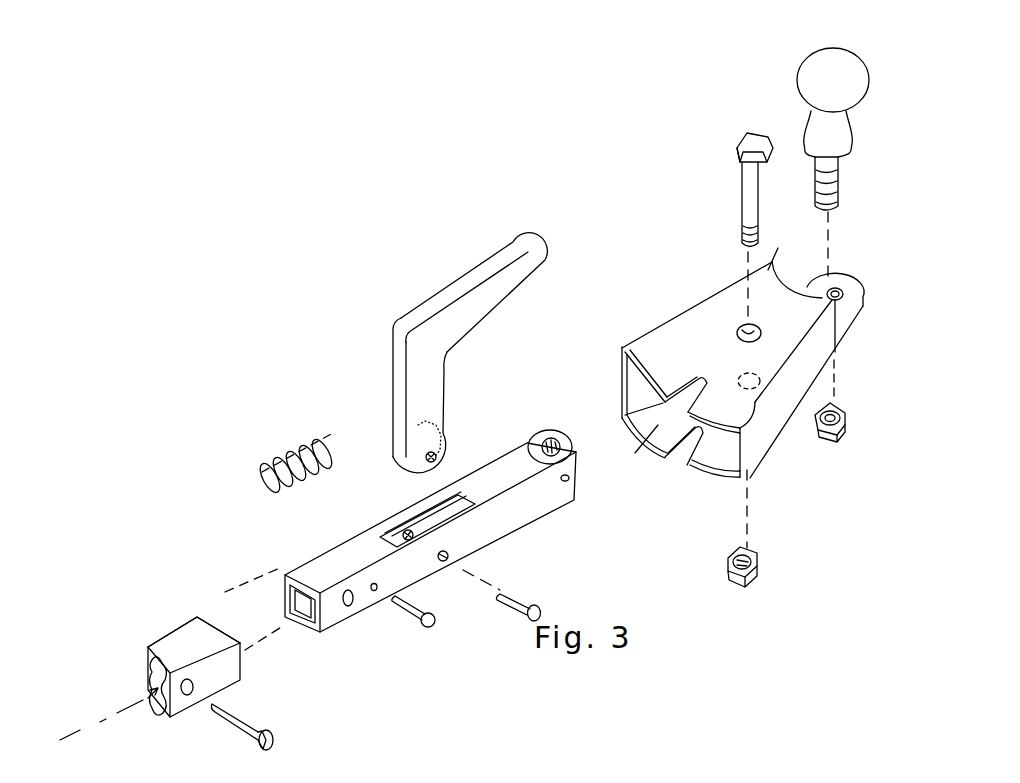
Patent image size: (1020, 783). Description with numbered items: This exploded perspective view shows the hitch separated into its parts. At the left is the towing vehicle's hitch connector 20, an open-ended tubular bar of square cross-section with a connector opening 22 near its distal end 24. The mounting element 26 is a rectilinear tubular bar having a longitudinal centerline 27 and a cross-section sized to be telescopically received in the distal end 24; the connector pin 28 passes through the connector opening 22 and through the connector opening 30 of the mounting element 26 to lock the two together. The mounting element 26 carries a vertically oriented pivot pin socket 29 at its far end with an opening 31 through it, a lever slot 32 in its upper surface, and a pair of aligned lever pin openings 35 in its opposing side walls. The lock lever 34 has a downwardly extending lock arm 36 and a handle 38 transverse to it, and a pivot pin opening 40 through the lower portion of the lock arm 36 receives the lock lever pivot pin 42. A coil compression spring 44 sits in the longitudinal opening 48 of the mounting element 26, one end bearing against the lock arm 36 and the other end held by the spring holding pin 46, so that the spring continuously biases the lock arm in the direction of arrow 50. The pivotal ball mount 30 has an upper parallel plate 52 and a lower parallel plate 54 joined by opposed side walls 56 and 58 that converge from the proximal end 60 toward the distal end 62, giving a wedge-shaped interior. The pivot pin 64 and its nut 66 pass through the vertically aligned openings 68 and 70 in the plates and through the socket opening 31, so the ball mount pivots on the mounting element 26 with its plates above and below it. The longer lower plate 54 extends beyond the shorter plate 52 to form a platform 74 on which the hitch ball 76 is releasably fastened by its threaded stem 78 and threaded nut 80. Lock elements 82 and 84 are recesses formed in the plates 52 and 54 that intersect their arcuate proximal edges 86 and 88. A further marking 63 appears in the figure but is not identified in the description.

The hitch connector 20 is at (178, 627).
The connector opening 22 is at (192, 690).
The distal end 24 is at (207, 630).
The mounting element 26 is at (441, 533).
The longitudinal centerline 27 is at (130, 700).
The connector pin 28 is at (232, 728).
The pivot pin socket 29 is at (533, 440).
The pivotal ball mount 30 is at (636, 435).
The socket opening 31 is at (557, 447).
The lever slot 32 is at (457, 503).
The lock lever 34 is at (455, 356).
The lever pin openings 35 is at (407, 530).
The lock arm 36 is at (438, 410).
The handle 38 is at (465, 278).
The pivot pin opening 40 is at (425, 462).
The lock lever pivot pin 42 is at (517, 597).
The coil compression spring 44 is at (303, 462).
The spring holding pin 46 is at (407, 615).
The longitudinal opening 48 is at (305, 610).
The arrow 50 is at (556, 228).
The upper parallel plate 52 is at (758, 398).
The lower parallel plate 54 is at (725, 470).
The side wall 56 is at (817, 373).
The side wall 58 is at (634, 393).
The proximal end 60 is at (647, 348).
The distal end 62 is at (783, 232).
The channel interior 63 is at (659, 424).
The pivot pin 64 is at (745, 190).
The nut 66 is at (758, 558).
The opening 68 is at (740, 337).
The opening 70 is at (740, 374).
The platform 74 is at (868, 306).
The hitch ball 76 is at (855, 58).
The threaded stem 78 is at (840, 178).
The threaded nut 80 is at (845, 425).
The lock element 82 is at (688, 383).
The lock element 84 is at (680, 457).
The proximal edge 86 is at (627, 375).
The proximal edge 88 is at (653, 448).